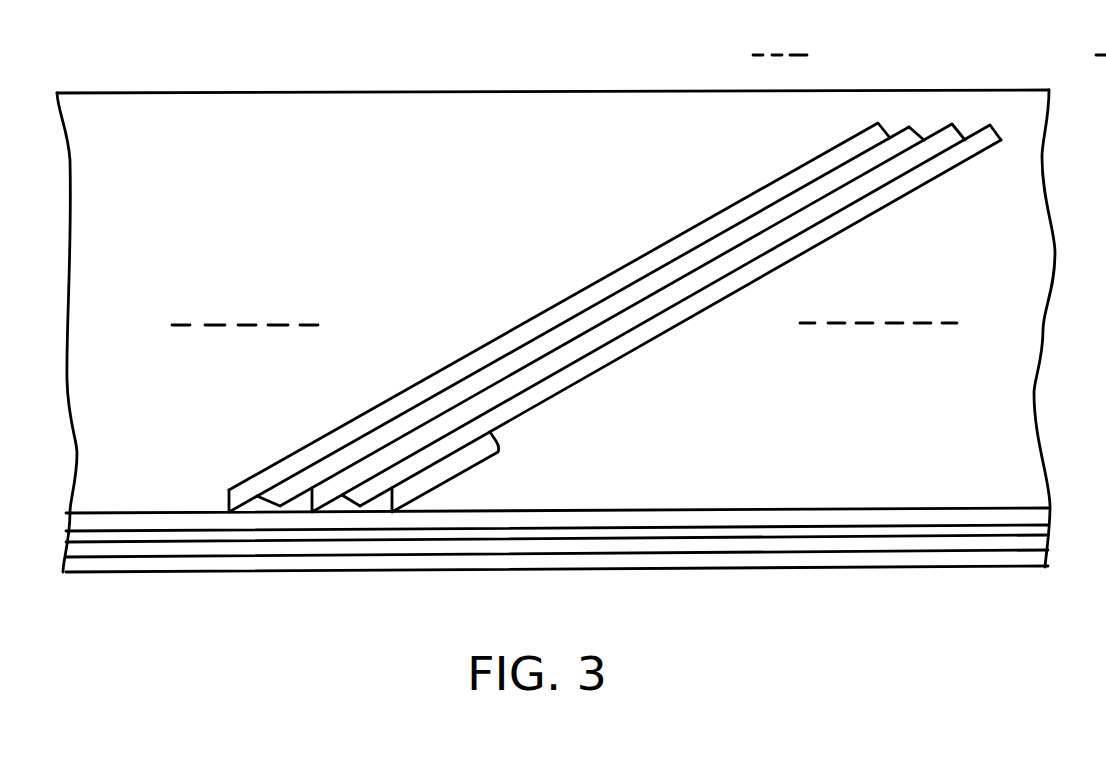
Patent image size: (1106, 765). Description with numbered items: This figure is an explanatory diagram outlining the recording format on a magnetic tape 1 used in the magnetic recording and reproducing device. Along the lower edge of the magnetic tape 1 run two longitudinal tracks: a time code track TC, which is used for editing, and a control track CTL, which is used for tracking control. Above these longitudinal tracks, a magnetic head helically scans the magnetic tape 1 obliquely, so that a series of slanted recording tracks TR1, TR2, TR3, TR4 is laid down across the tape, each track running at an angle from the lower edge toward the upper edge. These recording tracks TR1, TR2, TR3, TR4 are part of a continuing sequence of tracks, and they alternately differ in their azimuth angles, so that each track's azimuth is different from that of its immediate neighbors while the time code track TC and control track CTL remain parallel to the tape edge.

The magnetic tape 1 is at (395, 32).
The recording track TR1 is at (881, 131).
The recording track TR2 is at (922, 133).
The recording track TR3 is at (960, 130).
The recording track TR4 is at (997, 137).
The control track CTL is at (728, 518).
The time code track TC is at (743, 547).